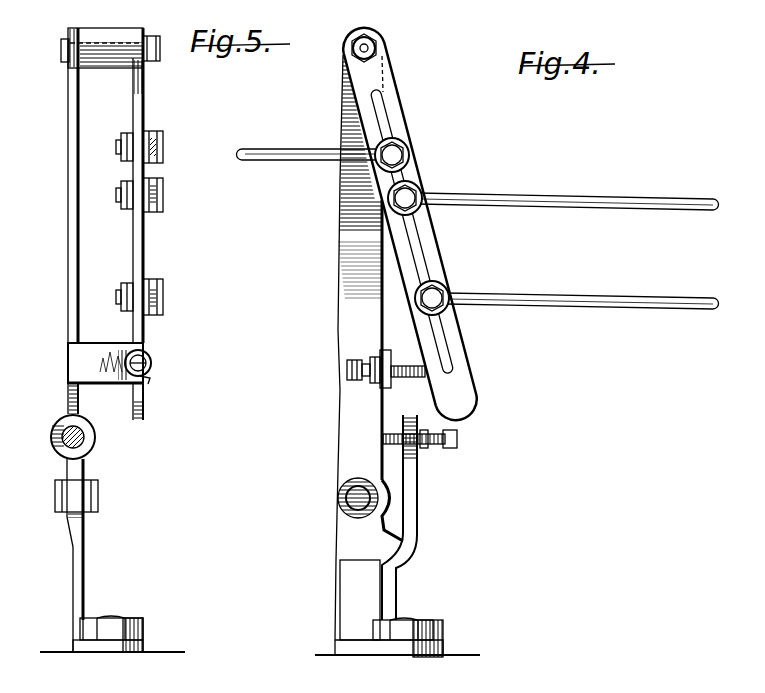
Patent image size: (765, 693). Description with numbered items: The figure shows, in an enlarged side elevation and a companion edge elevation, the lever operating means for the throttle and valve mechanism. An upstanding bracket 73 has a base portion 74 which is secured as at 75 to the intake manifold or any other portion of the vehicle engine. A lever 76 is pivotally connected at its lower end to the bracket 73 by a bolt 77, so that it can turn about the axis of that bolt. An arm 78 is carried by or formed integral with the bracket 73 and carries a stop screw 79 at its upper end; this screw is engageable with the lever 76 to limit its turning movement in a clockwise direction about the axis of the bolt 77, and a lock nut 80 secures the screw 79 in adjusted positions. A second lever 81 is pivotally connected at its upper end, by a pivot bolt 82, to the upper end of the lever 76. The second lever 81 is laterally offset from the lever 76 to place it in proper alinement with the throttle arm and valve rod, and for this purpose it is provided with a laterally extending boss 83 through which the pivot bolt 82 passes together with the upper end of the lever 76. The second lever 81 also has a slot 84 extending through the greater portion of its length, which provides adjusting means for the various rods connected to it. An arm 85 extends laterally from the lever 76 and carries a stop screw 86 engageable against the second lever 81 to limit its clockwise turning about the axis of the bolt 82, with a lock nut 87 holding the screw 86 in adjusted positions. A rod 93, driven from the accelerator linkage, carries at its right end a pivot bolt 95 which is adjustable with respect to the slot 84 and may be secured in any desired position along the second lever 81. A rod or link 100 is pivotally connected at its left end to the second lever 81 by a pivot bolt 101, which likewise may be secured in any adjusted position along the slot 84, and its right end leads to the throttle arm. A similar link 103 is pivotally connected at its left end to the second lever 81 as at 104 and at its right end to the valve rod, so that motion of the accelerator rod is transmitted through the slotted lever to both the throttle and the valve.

In FIG. 5, the upstanding bracket 73 is at (80, 580).
In FIG. 4, the upstanding bracket 73 is at (336, 583).
In FIG. 5, the base portion 74 is at (143, 650).
In FIG. 4, the base portion 74 is at (446, 652).
In FIG. 5, the securing means 75 is at (130, 617).
In FIG. 4, the securing means 75 is at (415, 620).
In FIG. 5, the lever 76 is at (68, 172).
In FIG. 4, the lever 76 is at (342, 327).
In FIG. 4, the bolt 77 is at (356, 498).
In FIG. 5, the arm 78 is at (68, 532).
In FIG. 4, the arm 78 is at (410, 520).
In FIG. 5, the stop screw 79 is at (92, 441).
In FIG. 4, the stop screw 79 is at (457, 440).
In FIG. 4, the lock nut 80 is at (425, 450).
In FIG. 5, the second lever 81 is at (145, 243).
In FIG. 4, the second lever 81 is at (446, 258).
In FIG. 5, the pivot bolt 82 is at (160, 49).
In FIG. 4, the pivot bolt 82 is at (376, 48).
In FIG. 5, the boss 83 is at (110, 70).
In FIG. 4, the slot 84 is at (424, 237).
In FIG. 5, the arm 85 is at (152, 358).
In FIG. 4, the arm 85 is at (386, 356).
In FIG. 5, the stop screw 86 is at (154, 366).
In FIG. 4, the stop screw 86 is at (412, 378).
In FIG. 5, the lock nut 87 is at (148, 378).
In FIG. 4, the lock nut 87 is at (373, 390).
In FIG. 5, the rod 93 is at (163, 145).
In FIG. 4, the rod 93 is at (260, 152).
In FIG. 5, the pivot bolt 95 is at (119, 148).
In FIG. 4, the pivot bolt 95 is at (410, 150).
In FIG. 5, the link 100 is at (150, 192).
In FIG. 4, the link 100 is at (599, 198).
In FIG. 5, the pivot bolt 101 is at (119, 191).
In FIG. 4, the pivot bolt 101 is at (420, 195).
In FIG. 5, the link 103 is at (162, 290).
In FIG. 4, the link 103 is at (599, 296).
In FIG. 5, the pivotal connection 104 is at (119, 298).
In FIG. 4, the pivotal connection 104 is at (450, 300).